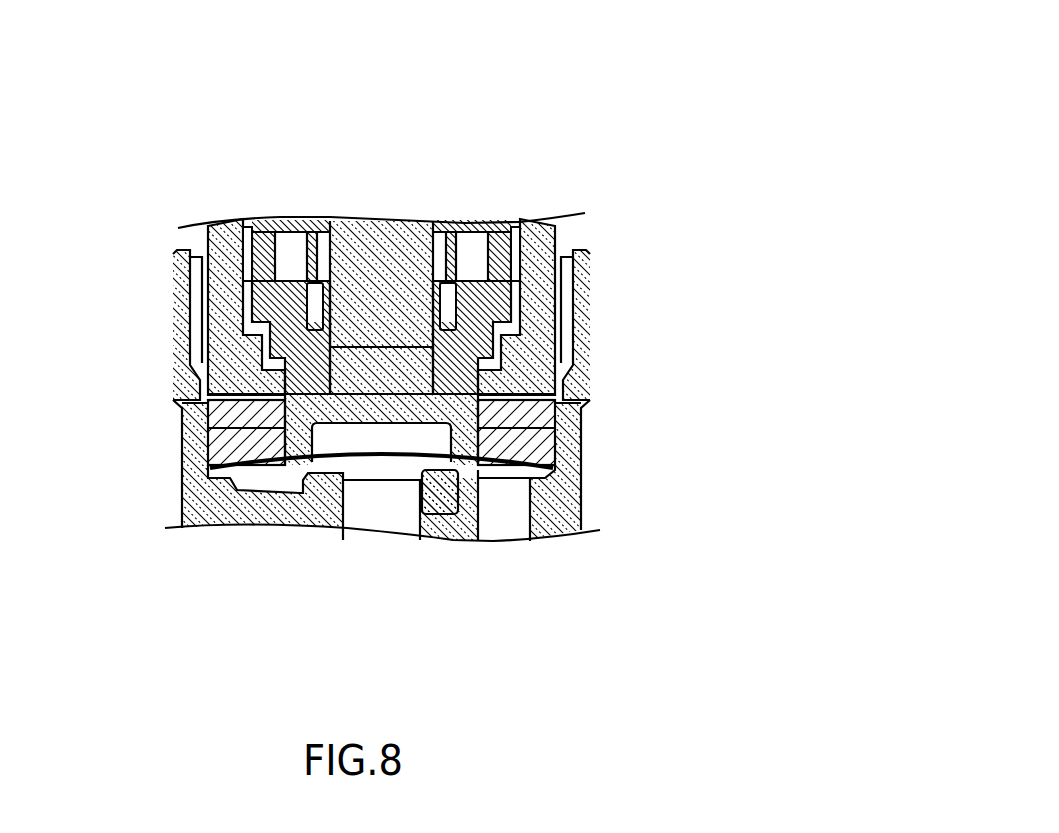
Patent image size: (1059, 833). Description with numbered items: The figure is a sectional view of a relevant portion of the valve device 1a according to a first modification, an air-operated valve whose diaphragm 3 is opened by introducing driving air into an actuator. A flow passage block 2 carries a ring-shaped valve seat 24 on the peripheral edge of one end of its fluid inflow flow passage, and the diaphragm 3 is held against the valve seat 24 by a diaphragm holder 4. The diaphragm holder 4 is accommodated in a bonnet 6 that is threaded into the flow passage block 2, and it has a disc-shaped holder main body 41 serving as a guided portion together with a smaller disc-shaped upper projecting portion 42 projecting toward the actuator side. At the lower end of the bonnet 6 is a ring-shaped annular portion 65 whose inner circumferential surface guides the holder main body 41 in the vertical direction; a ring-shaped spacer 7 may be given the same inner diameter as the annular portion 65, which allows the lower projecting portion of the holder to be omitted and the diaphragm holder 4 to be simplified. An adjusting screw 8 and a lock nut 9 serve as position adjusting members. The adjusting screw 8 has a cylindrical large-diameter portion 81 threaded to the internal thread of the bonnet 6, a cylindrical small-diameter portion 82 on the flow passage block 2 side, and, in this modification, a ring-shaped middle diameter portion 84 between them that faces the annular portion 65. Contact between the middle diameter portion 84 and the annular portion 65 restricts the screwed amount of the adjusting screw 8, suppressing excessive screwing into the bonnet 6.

The valve device 1a is at (631, 106).
The flow passage block 2 is at (567, 517).
The diaphragm 3 is at (478, 463).
The diaphragm holder 4 is at (173, 403).
The bonnet 6 is at (222, 242).
The spacer 7 is at (262, 430).
The adjusting screw 8 is at (432, 300).
The lock nut 9 is at (495, 242).
The valve seat 24 is at (436, 497).
The holder main body 41 is at (374, 427).
The upper projecting portion 42 is at (367, 350).
The annular portion 65 is at (300, 405).
The large-diameter portion 81 is at (505, 303).
The small-diameter portion 82 is at (466, 384).
The middle diameter portion 84 is at (490, 343).